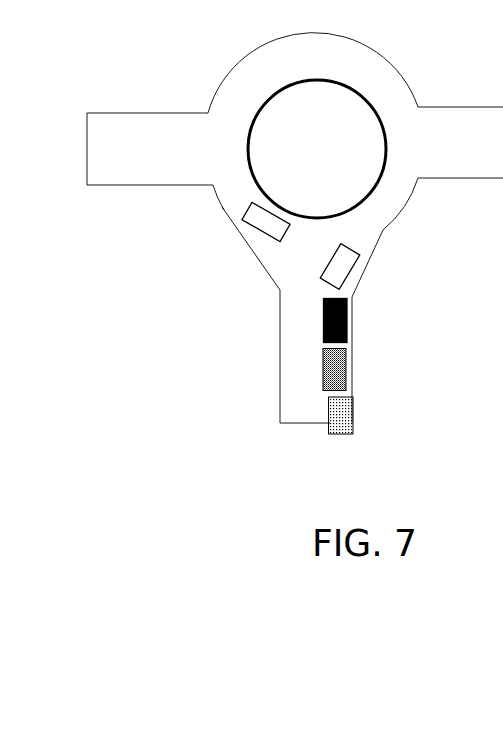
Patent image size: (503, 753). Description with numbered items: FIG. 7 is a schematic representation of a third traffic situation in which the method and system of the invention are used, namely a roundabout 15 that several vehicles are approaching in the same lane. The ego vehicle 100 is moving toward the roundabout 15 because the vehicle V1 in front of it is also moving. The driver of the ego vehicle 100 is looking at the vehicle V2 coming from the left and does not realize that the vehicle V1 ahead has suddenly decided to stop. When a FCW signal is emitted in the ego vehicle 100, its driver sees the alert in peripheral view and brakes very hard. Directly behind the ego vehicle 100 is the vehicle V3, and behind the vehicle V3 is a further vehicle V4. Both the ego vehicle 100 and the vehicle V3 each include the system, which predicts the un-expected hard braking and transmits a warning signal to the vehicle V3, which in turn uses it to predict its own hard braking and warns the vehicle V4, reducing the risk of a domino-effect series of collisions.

The roundabout 15 is at (328, 166).
The vehicle V1 is at (348, 275).
The vehicle V2 is at (267, 228).
The vehicle V3 is at (340, 373).
The vehicle V4 is at (353, 420).
The ego vehicle 100 is at (348, 325).